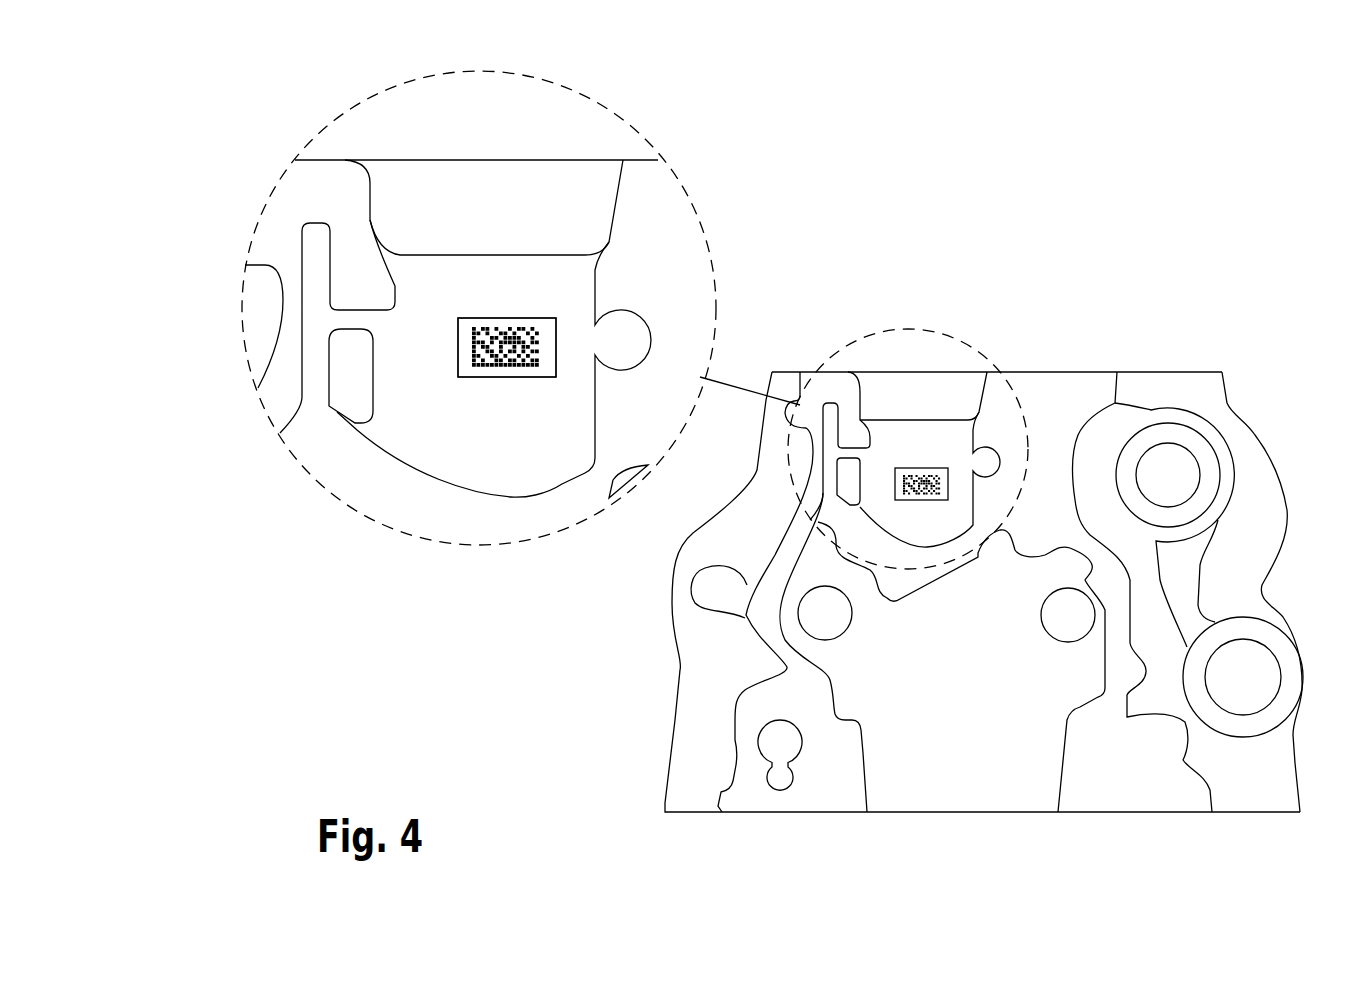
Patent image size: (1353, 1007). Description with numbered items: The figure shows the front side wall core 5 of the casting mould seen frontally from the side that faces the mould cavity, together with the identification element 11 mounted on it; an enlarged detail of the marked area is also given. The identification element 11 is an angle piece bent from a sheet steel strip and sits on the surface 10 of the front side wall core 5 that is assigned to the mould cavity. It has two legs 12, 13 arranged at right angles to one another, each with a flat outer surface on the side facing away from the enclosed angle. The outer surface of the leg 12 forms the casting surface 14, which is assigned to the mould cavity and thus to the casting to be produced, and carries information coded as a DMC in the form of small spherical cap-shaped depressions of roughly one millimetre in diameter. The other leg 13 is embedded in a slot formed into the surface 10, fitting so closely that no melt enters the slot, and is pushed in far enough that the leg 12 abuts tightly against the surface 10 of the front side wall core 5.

The front side wall core 5 is at (1155, 373).
The surface 10 is at (556, 278).
The identification element 11 is at (913, 473).
The leg 12 is at (542, 352).
The leg 13 is at (458, 333).
The casting surface 14 is at (458, 377).